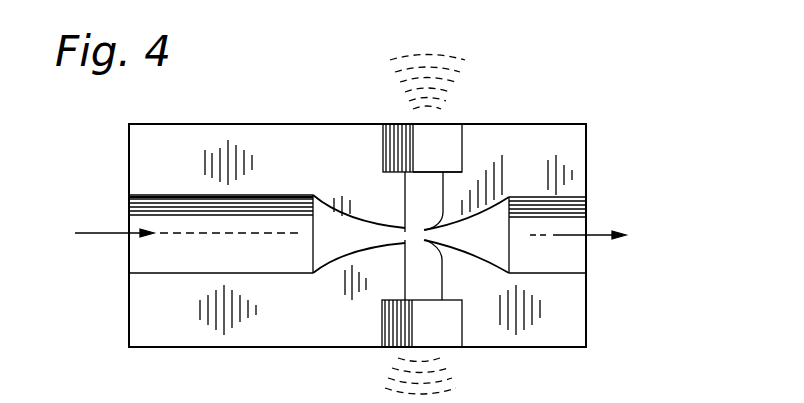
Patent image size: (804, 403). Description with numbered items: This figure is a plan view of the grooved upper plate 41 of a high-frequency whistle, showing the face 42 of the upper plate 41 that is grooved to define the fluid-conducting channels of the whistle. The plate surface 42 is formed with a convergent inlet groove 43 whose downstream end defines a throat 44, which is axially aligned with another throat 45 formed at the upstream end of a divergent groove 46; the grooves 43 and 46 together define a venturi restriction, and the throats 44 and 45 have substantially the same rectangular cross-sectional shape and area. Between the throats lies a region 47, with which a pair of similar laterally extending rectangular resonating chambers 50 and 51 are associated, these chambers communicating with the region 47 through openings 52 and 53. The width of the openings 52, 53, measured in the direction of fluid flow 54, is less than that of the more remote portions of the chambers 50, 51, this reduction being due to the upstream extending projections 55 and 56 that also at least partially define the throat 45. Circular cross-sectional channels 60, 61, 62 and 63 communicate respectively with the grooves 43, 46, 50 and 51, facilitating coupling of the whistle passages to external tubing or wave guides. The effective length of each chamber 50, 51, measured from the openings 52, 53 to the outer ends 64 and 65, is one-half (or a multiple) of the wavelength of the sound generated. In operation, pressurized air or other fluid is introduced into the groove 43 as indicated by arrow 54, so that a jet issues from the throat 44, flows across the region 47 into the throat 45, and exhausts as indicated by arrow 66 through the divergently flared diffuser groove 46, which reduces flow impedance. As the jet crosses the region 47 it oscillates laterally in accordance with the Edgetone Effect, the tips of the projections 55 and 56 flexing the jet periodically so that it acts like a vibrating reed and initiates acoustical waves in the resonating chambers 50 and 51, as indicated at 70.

The upper plate 41 is at (540, 349).
The face of the upper plate 42 is at (312, 334).
The convergent inlet groove 43 is at (313, 243).
The throat 44 is at (420, 235).
The throat 45 is at (430, 234).
The divergent groove 46 is at (495, 266).
The region between throats 47 is at (405, 205).
The resonating chamber 50 is at (434, 177).
The resonating chamber 51 is at (420, 279).
The opening 52 is at (410, 195).
The opening 53 is at (410, 248).
The direction of fluid flow 54 is at (97, 228).
The upstream extending projection 55 is at (430, 227).
The upstream extending projection 56 is at (435, 250).
The circular cross-sectional channel 60 is at (135, 262).
The circular cross-sectional channel 61 is at (568, 262).
The circular cross-sectional channel 62 is at (455, 124).
The circular cross-sectional channel 63 is at (400, 348).
The effective outer end of resonating chamber 64 is at (413, 170).
The effective outer end of resonating chamber 65 is at (421, 304).
The exhaust flow arrow 66 is at (590, 232).
The acoustical waves 70 is at (433, 56).